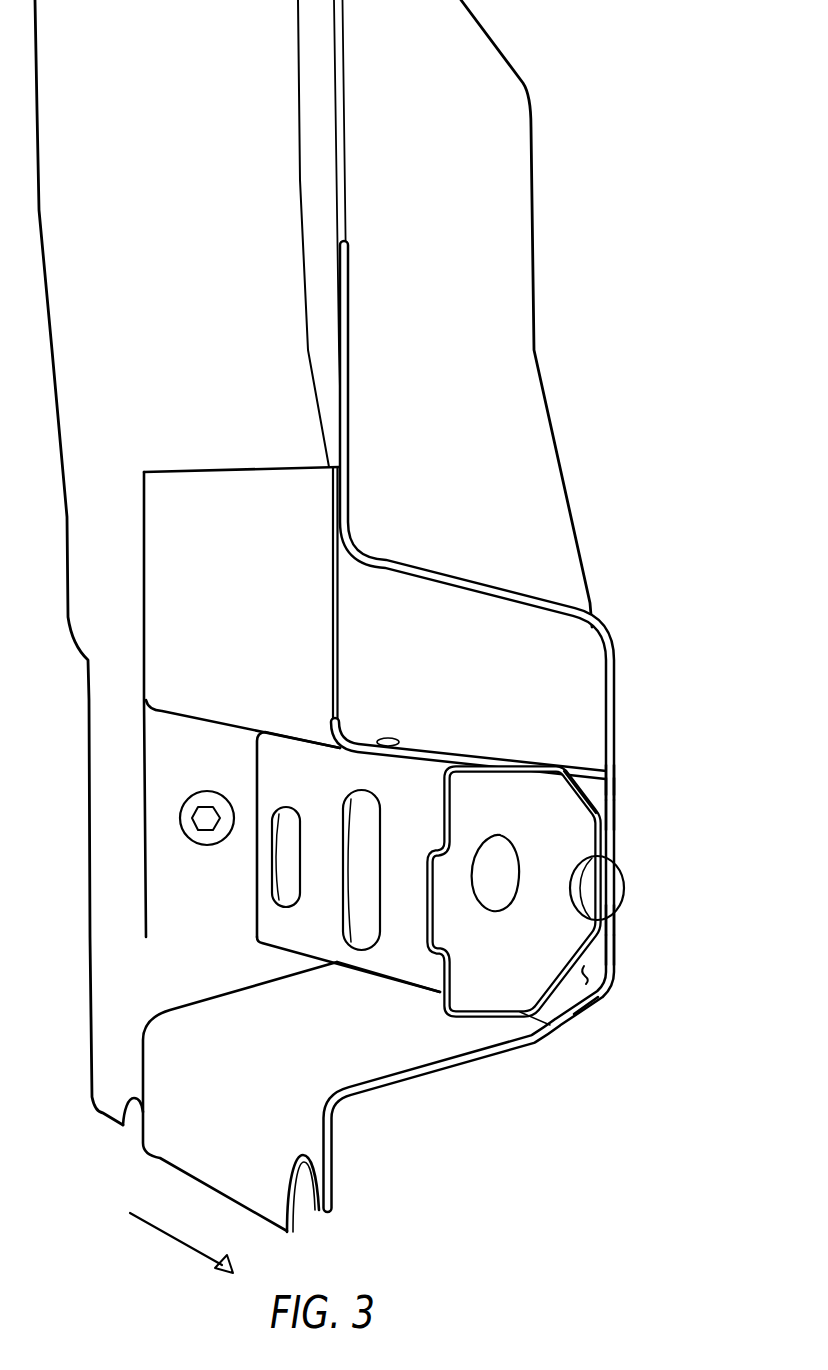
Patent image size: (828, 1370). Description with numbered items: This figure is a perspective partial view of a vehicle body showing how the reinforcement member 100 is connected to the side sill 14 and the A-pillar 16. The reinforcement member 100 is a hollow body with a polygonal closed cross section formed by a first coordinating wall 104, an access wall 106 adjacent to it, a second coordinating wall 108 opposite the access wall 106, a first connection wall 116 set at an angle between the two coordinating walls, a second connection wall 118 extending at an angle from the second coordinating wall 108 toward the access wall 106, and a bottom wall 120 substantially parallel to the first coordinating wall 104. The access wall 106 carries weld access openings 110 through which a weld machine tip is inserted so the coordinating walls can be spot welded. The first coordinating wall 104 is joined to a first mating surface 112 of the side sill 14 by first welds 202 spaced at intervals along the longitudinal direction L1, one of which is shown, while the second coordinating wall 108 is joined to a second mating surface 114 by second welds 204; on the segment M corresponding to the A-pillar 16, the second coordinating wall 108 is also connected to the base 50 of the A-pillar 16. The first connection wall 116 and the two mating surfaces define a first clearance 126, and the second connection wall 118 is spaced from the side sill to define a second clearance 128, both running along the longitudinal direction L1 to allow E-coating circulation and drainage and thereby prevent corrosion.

The side sill 14 is at (463, 754).
The A-pillar 16 is at (539, 390).
The base of A-pillar 50 is at (615, 786).
The reinforcement member 100 is at (488, 1018).
The first coordinating wall 104 is at (495, 768).
The access wall 106 is at (423, 967).
The second coordinating wall 108 is at (615, 921).
The weld access opening 110 is at (367, 938).
The first mating surface 112 is at (567, 763).
The second mating surface 114 is at (615, 948).
The first connection wall 116 is at (606, 813).
The second connection wall 118 is at (580, 1000).
The bottom wall 120 is at (540, 1024).
The first clearance 126 is at (604, 780).
The second clearance 128 is at (597, 977).
The first weld 202 is at (397, 742).
The second weld 204 is at (488, 887).
The segment of the reinforcement member M is at (300, 928).
The longitudinal direction L1 is at (181, 1242).